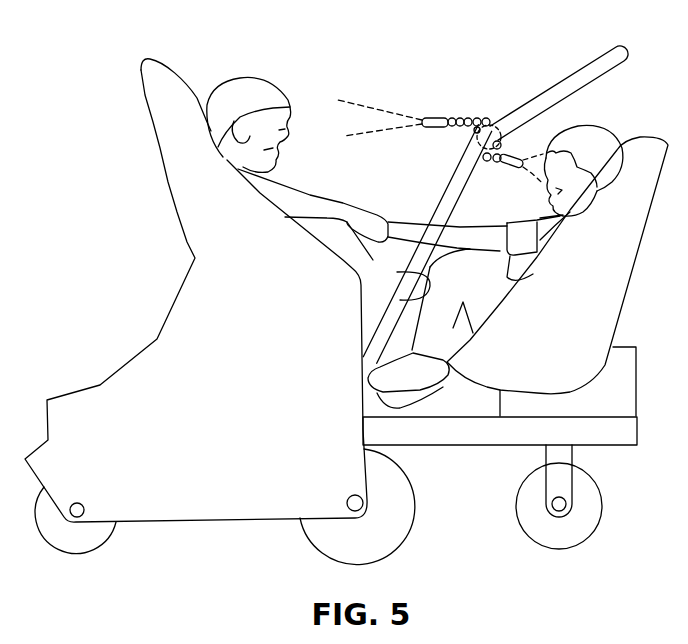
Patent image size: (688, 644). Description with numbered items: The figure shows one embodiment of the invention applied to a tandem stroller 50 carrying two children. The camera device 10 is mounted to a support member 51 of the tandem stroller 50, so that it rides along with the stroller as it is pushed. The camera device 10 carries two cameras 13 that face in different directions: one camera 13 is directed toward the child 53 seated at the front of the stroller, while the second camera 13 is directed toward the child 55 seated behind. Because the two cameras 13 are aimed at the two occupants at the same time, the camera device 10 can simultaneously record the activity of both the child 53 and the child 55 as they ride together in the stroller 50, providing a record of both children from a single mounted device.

The camera device 10 is at (459, 104).
The camera 13 is at (434, 113).
The tandem stroller 50 is at (239, 406).
The support member 51 is at (591, 62).
The child 53 is at (249, 76).
The child 55 is at (604, 126).